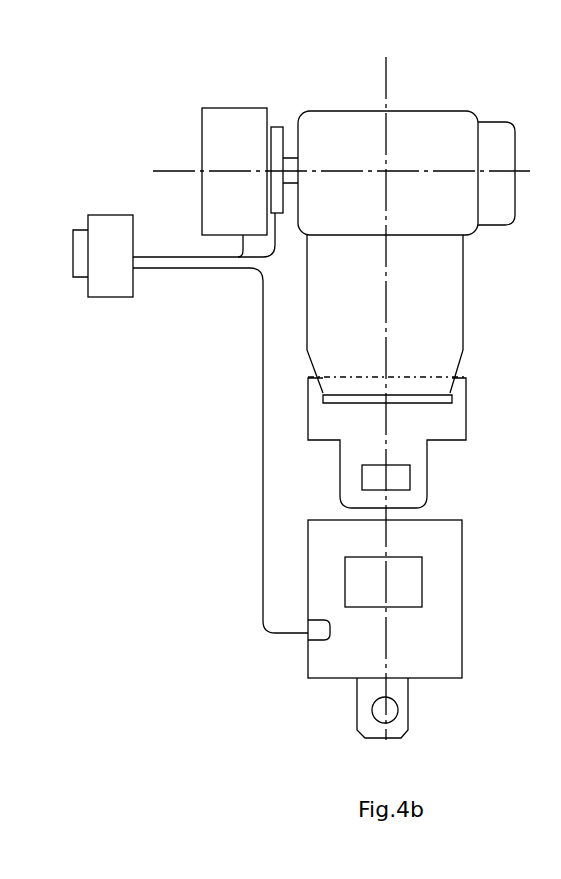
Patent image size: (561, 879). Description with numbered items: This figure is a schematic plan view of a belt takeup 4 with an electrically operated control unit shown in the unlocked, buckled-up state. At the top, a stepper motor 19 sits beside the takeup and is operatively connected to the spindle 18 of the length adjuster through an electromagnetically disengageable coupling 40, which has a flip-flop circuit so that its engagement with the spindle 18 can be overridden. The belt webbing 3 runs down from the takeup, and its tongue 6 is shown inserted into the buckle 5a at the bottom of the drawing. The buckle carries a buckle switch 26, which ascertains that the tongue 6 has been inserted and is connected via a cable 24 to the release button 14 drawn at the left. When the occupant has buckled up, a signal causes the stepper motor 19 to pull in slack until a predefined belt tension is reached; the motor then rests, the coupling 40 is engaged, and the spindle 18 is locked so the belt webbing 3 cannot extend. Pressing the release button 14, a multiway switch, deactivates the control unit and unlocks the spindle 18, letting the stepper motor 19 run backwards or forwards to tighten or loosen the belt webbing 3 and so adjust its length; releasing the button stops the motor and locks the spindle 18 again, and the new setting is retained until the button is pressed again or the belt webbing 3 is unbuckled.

The belt webbing 3 is at (453, 313).
The belt takeup 4 is at (462, 226).
The mounting block 5a is at (453, 573).
The tongue 6 is at (453, 425).
The release button 14 is at (101, 213).
The spindle 18 is at (288, 150).
The stepper motor 19 is at (200, 138).
The cable 24 is at (163, 257).
The buckle switch 26 is at (308, 638).
The electromagnetically disengageable coupling 40 is at (277, 124).